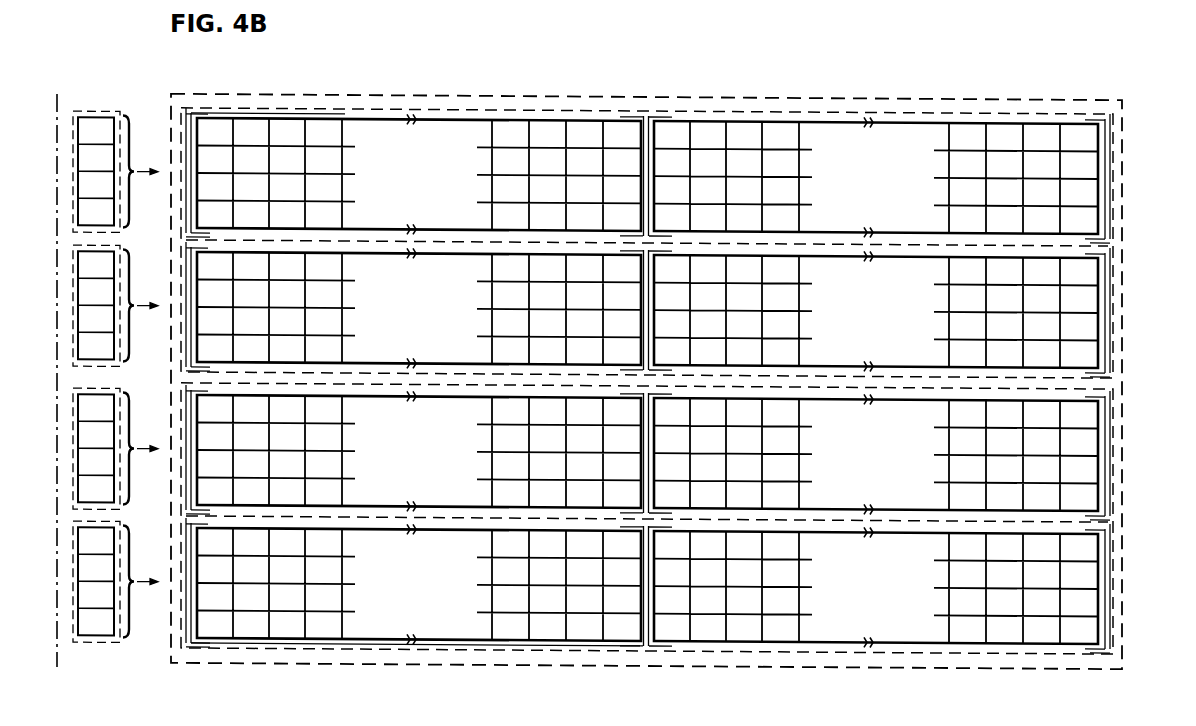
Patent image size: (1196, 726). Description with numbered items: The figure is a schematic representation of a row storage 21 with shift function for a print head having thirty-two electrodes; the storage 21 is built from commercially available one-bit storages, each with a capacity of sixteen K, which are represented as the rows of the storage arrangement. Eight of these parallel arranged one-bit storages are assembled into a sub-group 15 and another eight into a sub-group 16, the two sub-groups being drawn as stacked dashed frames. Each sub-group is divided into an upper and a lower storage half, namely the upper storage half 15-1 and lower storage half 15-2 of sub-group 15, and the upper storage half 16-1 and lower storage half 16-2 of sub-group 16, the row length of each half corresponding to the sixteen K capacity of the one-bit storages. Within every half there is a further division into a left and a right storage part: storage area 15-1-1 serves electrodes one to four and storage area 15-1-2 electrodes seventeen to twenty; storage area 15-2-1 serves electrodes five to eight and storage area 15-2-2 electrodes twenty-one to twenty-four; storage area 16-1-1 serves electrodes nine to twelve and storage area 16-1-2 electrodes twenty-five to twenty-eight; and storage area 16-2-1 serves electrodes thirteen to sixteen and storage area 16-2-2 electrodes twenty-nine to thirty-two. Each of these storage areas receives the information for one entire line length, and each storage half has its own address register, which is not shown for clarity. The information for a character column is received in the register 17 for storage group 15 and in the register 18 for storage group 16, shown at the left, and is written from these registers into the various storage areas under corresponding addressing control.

The sub-group 15 is at (1112, 243).
The sub-group 16 is at (1112, 522).
The register 17 is at (85, 113).
The register 18 is at (106, 650).
The row storage 21 is at (1122, 305).
The upper storage half 15-1 is at (1108, 184).
The lower storage half 15-2 is at (1108, 338).
The upper storage half 16-1 is at (1106, 452).
The lower storage half 16-2 is at (1110, 598).
The storage area 15-1-1 is at (627, 100).
The storage area 15-1-2 is at (658, 118).
The storage area 15-2-1 is at (191, 351).
The storage area 15-2-2 is at (1100, 362).
The storage area 16-1-1 is at (191, 402).
The storage area 16-1-2 is at (1106, 402).
The storage area 16-2-1 is at (191, 652).
The storage area 16-2-2 is at (1106, 545).